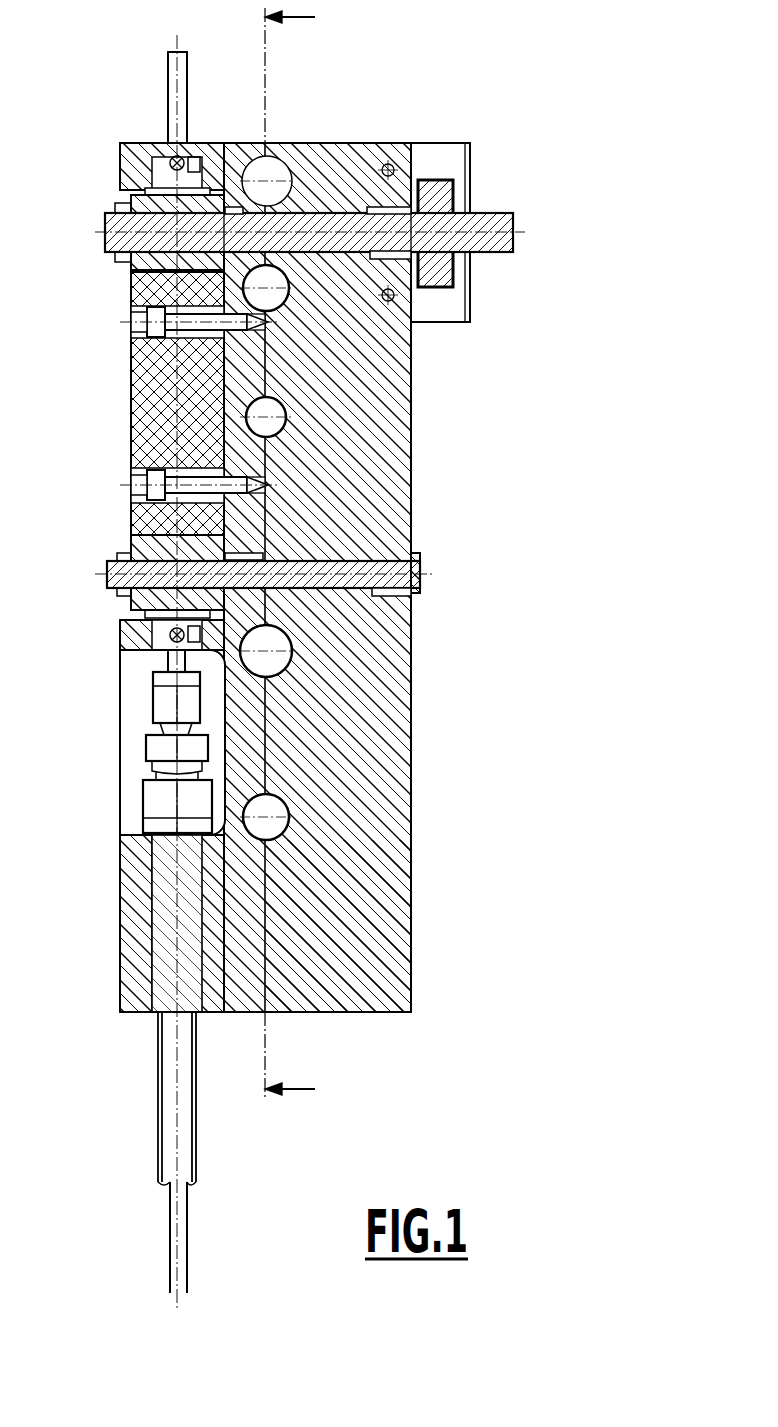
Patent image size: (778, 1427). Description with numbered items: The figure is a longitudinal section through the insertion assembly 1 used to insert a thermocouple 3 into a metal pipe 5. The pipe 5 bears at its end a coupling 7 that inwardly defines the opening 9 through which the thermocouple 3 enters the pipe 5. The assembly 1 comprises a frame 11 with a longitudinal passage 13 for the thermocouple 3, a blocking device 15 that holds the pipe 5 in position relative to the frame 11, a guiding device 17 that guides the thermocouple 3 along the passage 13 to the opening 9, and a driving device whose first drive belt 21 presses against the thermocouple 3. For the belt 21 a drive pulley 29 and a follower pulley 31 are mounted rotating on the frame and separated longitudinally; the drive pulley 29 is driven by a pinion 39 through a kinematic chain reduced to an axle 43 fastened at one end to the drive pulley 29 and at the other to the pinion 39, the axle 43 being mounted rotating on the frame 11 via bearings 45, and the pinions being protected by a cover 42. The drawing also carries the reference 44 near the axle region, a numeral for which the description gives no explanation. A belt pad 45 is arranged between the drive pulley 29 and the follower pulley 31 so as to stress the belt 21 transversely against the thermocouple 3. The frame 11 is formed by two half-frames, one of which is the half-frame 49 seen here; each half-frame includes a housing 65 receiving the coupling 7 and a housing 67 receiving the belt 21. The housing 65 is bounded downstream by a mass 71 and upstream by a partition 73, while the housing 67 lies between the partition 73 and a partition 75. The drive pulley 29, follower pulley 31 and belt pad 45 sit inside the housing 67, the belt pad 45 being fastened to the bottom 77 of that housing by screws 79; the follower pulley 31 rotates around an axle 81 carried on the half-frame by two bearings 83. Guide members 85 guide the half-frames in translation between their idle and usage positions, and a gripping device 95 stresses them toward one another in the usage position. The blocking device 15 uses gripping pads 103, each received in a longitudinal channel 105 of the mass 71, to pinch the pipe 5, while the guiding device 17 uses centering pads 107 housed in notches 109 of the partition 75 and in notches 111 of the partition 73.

The assembly 1 is at (530, 443).
The thermocouple 3 is at (187, 72).
The pipe 5 is at (168, 1130).
The coupling 7 is at (150, 800).
The opening 9 is at (165, 660).
The frame 11 is at (328, 102).
The longitudinal passage 13 is at (142, 656).
The blocking device 15 is at (130, 872).
The guiding device 17 is at (145, 130).
The first drive belt 21 is at (122, 172).
The drive pulley 29 is at (120, 252).
The follower pulley 31 is at (240, 545).
The pinion 39 is at (440, 185).
The cover 42 is at (470, 195).
The axle 43 is at (338, 220).
The slot 44 is at (243, 210).
The belt pad 45 is at (150, 398).
The half-frame 49 is at (370, 895).
The housing 65 is at (135, 747).
The housing 67 is at (130, 190).
The mass 71 is at (140, 975).
The partition 73 is at (118, 612).
The partition 75 is at (122, 142).
The bottom 77 is at (162, 375).
The screws 79 is at (128, 299).
The axle 81 is at (386, 548).
The bearings 83 is at (396, 602).
The guide members 85 is at (268, 156).
The gripping device 95 is at (285, 410).
The gripping pad 103 is at (160, 985).
The longitudinal channel 105 is at (140, 935).
The centering pad 107 is at (196, 143).
The notch 109 is at (163, 140).
The notch 111 is at (330, 690).